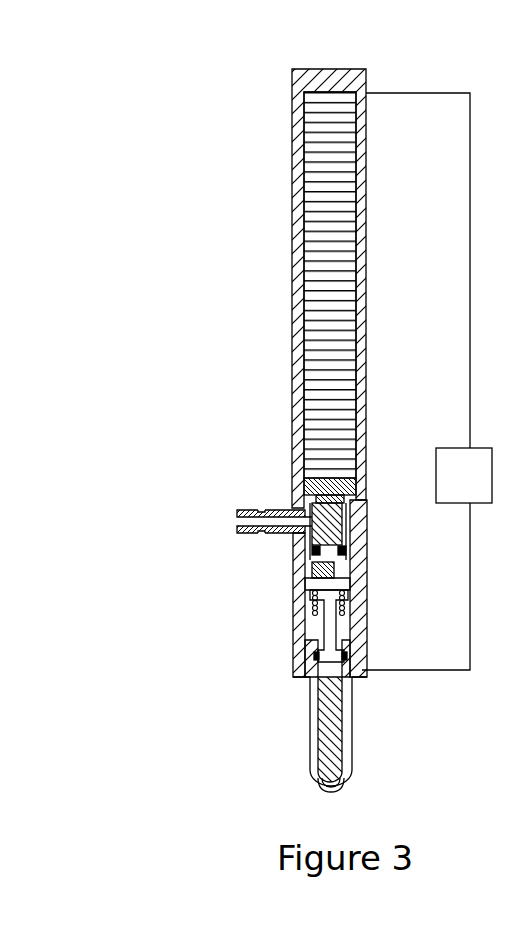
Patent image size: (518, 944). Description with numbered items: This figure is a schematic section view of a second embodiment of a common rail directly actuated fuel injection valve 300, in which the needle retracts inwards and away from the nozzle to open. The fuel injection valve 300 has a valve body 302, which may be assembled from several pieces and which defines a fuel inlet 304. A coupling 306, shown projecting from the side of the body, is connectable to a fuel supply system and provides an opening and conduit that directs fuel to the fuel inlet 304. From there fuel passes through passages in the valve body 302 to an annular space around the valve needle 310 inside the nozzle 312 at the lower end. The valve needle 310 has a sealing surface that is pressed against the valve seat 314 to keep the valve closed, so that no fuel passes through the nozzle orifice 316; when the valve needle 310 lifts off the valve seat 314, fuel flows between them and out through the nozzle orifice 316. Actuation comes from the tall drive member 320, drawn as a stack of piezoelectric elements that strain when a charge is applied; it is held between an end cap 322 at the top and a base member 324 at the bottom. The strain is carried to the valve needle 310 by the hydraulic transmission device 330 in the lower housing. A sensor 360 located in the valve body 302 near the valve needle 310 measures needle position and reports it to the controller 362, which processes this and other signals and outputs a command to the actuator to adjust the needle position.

The fuel injection valve 300 is at (183, 82).
The valve body 302 is at (345, 625).
The fuel inlet 304 is at (287, 508).
The coupling 306 is at (243, 510).
The valve needle 310 is at (330, 712).
The nozzle 312 is at (350, 745).
The valve seat 314 is at (345, 786).
The nozzle orifice 316 is at (318, 785).
The drive member 320 is at (310, 292).
The end cap 322 is at (345, 72).
The base member 324 is at (307, 478).
The hydraulic transmission device 330 is at (244, 606).
The sensor 360 is at (346, 655).
The controller 362 is at (481, 491).